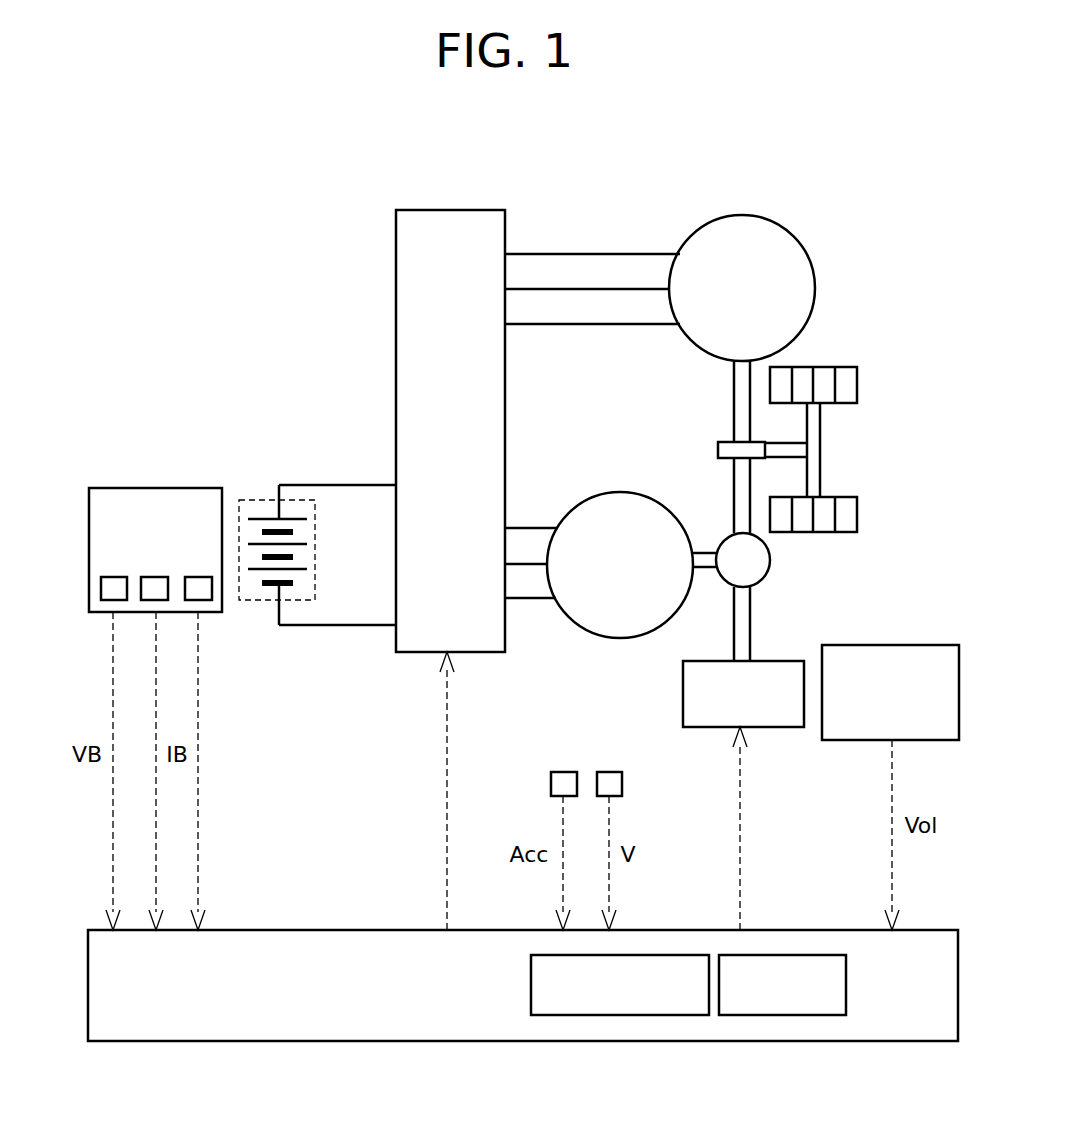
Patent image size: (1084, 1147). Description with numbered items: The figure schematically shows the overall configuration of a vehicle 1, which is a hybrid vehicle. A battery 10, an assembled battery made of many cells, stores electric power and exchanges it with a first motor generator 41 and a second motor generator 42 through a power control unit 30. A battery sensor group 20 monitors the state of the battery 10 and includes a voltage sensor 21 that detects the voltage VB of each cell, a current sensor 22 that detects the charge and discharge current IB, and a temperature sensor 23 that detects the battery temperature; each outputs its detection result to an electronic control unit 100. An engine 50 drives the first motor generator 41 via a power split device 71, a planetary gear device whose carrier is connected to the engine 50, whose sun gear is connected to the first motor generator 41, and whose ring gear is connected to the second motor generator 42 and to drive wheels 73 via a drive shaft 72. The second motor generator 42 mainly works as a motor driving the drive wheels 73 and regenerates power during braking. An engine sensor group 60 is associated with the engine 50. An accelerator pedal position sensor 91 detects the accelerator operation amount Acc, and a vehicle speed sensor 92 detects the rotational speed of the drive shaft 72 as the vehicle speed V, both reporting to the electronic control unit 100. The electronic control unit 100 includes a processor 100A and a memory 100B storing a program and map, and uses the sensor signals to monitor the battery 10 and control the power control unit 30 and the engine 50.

The vehicle 1 is at (228, 185).
The battery 10 is at (295, 500).
The battery sensor group 20 is at (152, 487).
The voltage sensor 21 is at (98, 593).
The current sensor 22 is at (148, 602).
The temperature sensor 23 is at (203, 602).
The power control unit 30 is at (465, 210).
The first motor generator 41 is at (638, 491).
The second motor generator 42 is at (760, 215).
The engine 50 is at (777, 727).
The engine sensor group 60 is at (915, 645).
The power split device 71 is at (762, 580).
The drive shaft 72 is at (815, 458).
The drive wheels 73 is at (847, 532).
The accelerator pedal position sensor 91 is at (561, 772).
The vehicle speed sensor 92 is at (606, 772).
The electronic control unit 100 is at (775, 930).
The processor 100A is at (633, 1015).
The memory 100B is at (778, 1015).